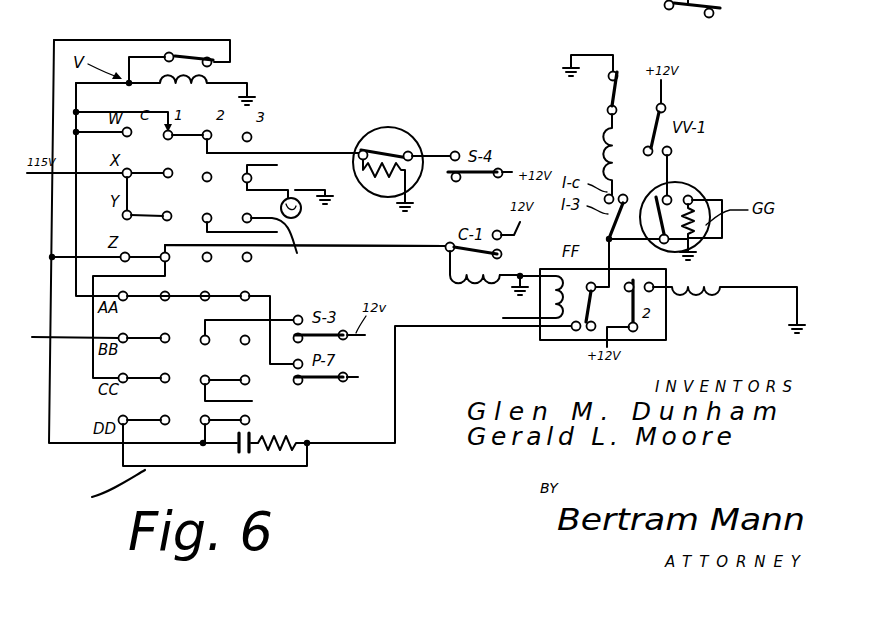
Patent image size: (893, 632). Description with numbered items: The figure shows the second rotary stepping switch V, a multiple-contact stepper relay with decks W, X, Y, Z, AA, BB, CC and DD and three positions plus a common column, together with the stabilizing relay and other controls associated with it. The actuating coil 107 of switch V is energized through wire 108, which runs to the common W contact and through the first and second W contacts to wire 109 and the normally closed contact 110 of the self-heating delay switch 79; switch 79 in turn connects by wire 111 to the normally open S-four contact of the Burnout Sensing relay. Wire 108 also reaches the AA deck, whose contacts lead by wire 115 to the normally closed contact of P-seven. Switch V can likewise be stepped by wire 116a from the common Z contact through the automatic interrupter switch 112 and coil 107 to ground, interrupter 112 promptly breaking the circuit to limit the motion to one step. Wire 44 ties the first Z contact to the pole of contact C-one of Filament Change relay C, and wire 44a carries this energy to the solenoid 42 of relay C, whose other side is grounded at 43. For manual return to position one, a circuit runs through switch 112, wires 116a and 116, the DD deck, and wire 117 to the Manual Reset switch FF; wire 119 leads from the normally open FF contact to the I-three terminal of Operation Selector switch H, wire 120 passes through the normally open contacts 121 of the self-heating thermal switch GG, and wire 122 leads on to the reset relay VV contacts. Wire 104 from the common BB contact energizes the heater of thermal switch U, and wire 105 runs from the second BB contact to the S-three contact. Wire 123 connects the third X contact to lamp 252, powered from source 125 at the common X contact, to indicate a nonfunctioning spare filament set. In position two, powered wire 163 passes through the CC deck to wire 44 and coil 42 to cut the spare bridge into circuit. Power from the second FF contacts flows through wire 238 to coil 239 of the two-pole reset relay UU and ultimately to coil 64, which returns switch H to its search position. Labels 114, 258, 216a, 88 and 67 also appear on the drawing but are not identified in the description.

The wire 116 is at (70, 443).
The wire 116a is at (93, 40).
The wire 117 is at (360, 447).
The automatic interrupter switch 112 is at (187, 53).
The actuating coil 107 is at (190, 69).
The wire 108 is at (76, 96).
The conductor 114 is at (76, 144).
The power source 125 is at (90, 200).
The wire 104 is at (76, 344).
The wire 109 is at (328, 153).
The self-heating type delay switch 79 is at (401, 146).
The normally closed contact 110 is at (388, 150).
The wire 111 is at (436, 152).
The wire 123 is at (247, 196).
The lamp 252 is at (300, 215).
The conductor 258 is at (292, 242).
The wire 44 is at (358, 246).
The wire 44a is at (448, 258).
The solenoid 42 is at (462, 288).
The ground 43 is at (505, 280).
The junction 216a is at (533, 287).
The wire 105 is at (283, 320).
The wire 115 is at (283, 380).
The conductor 88 is at (356, 378).
The powered wire 163 is at (238, 404).
The switch 67 is at (609, 96).
The coil 64 is at (606, 145).
The normally open contacts 121 is at (646, 128).
The wire 122 is at (668, 165).
The wire 119 is at (607, 238).
The wire 120 is at (622, 240).
The wire 238 is at (652, 292).
The coil 239 is at (722, 294).